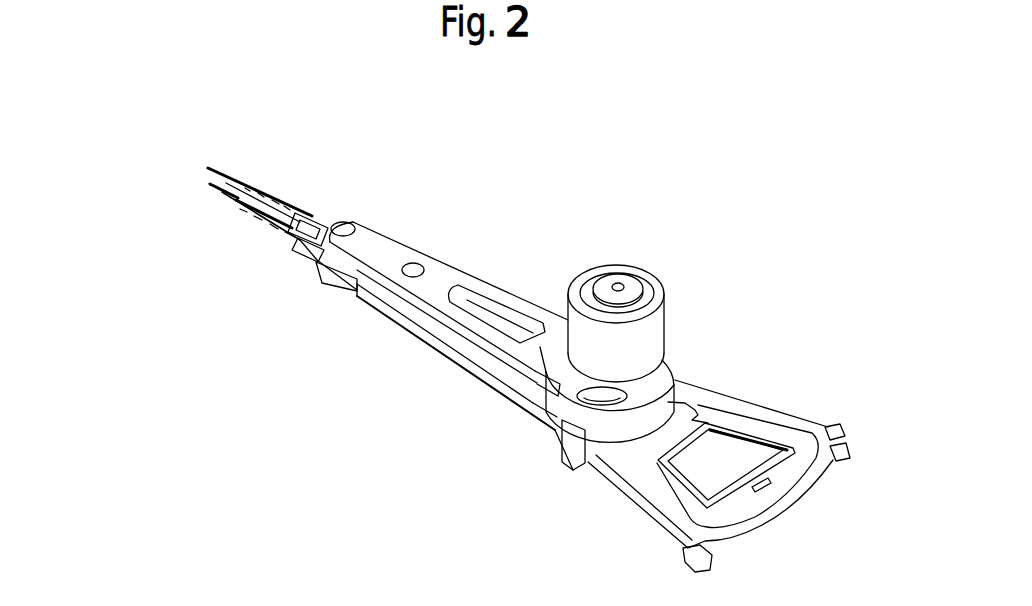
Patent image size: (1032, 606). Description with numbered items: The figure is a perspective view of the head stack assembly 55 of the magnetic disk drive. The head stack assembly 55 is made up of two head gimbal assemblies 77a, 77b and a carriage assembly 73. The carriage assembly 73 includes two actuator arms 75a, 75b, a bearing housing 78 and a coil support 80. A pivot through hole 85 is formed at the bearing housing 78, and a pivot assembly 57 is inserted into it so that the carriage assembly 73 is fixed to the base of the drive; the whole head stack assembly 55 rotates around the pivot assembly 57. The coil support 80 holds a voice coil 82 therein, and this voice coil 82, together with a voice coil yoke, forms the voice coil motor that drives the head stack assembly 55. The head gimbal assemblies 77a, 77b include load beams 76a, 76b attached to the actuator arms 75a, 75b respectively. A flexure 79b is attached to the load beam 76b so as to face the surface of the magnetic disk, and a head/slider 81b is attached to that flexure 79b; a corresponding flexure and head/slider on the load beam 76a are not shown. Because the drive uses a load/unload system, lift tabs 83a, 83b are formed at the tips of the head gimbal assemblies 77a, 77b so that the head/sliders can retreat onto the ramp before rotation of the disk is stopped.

The head stack assembly 55 is at (648, 170).
The pivot assembly 57 is at (650, 260).
The carriage assembly 73 is at (510, 417).
The actuator arm 75a is at (440, 270).
The actuator arm 75b is at (397, 322).
The load beam 76a is at (292, 206).
The load beam 76b is at (256, 237).
The head gimbal assembly 77a is at (267, 173).
The head gimbal assembly 77b is at (244, 247).
The bearing housing 78 is at (567, 443).
The flexure 79b is at (262, 226).
The coil support 80 is at (652, 500).
The head/slider 81b is at (224, 203).
The voice coil 82 is at (760, 430).
The lift tab 83a is at (218, 168).
The lift tab 83b is at (207, 188).
The pivot through hole 85 is at (582, 375).